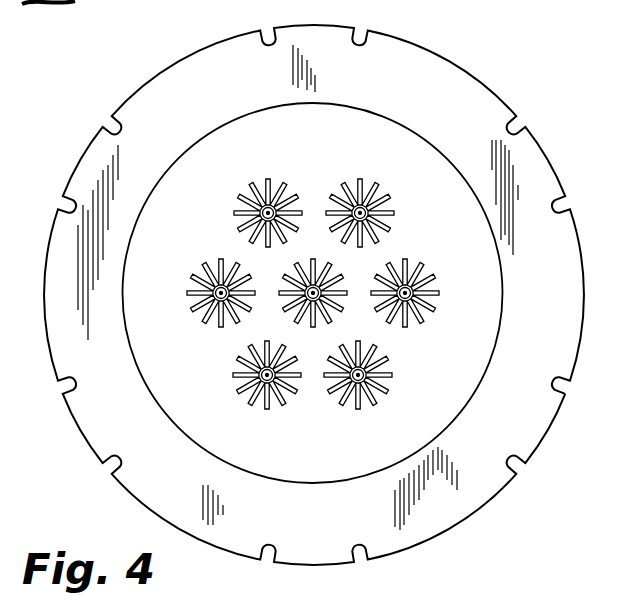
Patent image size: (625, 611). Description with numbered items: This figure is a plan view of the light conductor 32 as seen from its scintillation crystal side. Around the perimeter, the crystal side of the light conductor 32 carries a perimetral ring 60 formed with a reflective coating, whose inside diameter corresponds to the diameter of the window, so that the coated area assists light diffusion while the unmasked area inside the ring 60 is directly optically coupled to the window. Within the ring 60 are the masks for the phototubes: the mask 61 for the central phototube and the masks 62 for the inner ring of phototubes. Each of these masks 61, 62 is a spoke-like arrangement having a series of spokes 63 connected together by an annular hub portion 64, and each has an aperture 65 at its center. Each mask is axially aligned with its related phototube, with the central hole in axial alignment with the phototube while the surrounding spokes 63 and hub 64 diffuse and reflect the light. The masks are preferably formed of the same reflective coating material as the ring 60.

The light conductor 32 is at (543, 145).
The perimetral ring 60 is at (428, 66).
The mask for the central phototube 61 is at (311, 318).
The masks for the inner ring of phototubes 62 is at (233, 207).
The spokes 63 is at (383, 376).
The annular hub portion 64 is at (362, 391).
The aperture 65 is at (350, 398).